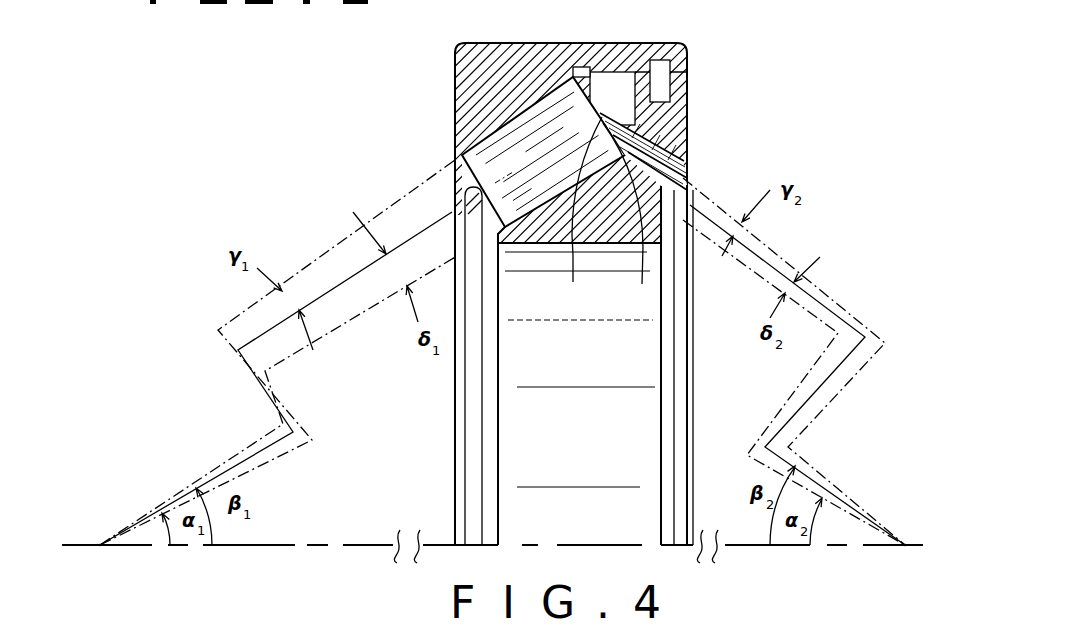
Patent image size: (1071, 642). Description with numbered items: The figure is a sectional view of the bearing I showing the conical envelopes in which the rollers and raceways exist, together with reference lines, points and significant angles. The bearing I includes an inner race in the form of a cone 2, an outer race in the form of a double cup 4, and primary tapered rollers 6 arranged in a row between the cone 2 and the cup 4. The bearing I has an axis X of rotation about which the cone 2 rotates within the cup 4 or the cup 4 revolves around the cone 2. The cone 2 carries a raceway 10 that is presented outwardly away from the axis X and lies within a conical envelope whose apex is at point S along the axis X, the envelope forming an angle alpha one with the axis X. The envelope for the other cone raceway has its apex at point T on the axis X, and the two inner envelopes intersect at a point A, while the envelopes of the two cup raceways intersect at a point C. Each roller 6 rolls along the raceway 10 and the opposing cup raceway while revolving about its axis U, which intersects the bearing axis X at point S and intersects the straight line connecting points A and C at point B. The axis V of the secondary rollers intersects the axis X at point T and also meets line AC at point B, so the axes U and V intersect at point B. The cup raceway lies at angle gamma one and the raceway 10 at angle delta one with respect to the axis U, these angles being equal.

The cone 2 is at (613, 236).
The double cup 4 is at (497, 68).
The primary tapered rollers 6 is at (455, 153).
The raceway 10 is at (690, 134).
The point A is at (625, 213).
The point B is at (584, 209).
The point C is at (573, 75).
The bearing I is at (345, 180).
The point S is at (98, 558).
The point T is at (906, 558).
The axis U is at (343, 280).
The axis V is at (757, 250).
The axis X is at (350, 546).